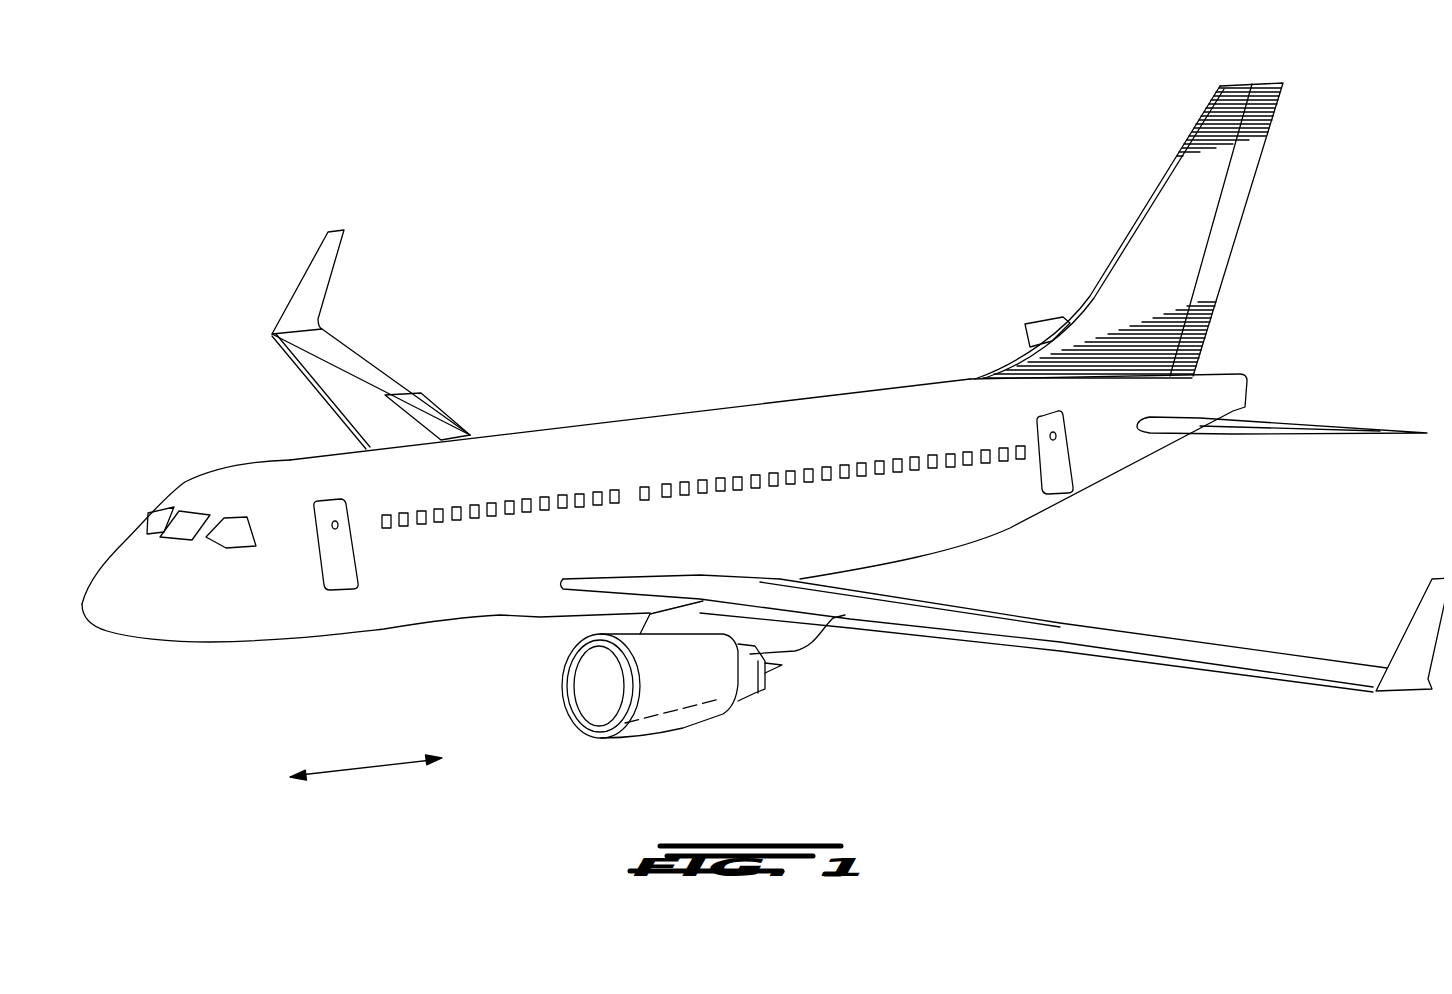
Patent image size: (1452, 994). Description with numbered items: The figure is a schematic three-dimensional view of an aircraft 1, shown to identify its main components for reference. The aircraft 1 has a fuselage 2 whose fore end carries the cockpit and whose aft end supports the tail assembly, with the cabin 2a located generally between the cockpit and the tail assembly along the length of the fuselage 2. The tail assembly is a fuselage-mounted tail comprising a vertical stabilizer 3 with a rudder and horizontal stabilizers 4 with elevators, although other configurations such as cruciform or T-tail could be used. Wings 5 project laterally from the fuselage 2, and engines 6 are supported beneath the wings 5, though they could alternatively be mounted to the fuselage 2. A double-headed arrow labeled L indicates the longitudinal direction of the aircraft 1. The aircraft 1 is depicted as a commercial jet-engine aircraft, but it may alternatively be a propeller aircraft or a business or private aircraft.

The aircraft 1 is at (637, 342).
The fuselage 2 is at (411, 590).
The cabin 2a is at (753, 428).
The vertical stabilizer 3 is at (1163, 226).
The horizontal stabilizers 4 is at (1040, 329).
The wings 5 is at (353, 384).
The engines 6 is at (717, 698).
The longitudinal direction L is at (360, 765).